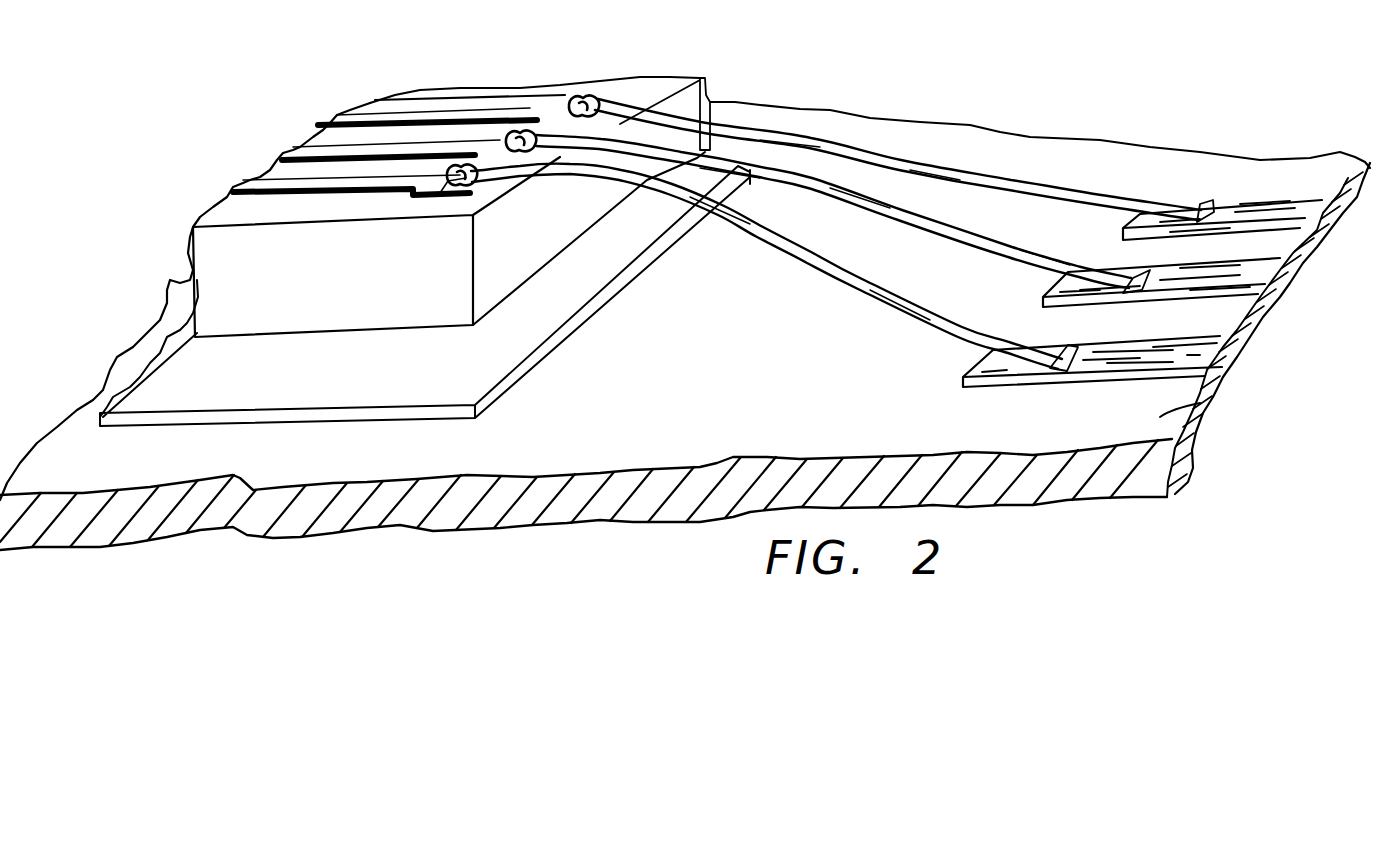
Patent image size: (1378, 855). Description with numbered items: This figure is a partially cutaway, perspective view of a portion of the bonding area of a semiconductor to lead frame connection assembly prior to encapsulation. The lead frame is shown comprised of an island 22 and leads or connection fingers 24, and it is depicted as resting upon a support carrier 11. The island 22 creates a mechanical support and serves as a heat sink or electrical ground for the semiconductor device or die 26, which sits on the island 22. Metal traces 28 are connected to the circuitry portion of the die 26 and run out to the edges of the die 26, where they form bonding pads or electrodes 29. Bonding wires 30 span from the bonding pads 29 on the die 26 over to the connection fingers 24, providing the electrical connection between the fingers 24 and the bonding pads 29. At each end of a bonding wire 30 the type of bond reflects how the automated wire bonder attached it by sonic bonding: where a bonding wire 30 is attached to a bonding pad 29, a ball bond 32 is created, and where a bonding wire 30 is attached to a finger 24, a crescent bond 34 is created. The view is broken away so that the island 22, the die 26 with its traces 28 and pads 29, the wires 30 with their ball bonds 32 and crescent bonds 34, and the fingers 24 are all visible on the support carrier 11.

The support carrier 11 is at (1213, 420).
The island 22 is at (170, 358).
The connection fingers 24 is at (1245, 278).
The die 26 is at (183, 303).
The metal traces 28 is at (293, 150).
The bonding pads 29 is at (433, 183).
The bonding wires 30 is at (628, 114).
The ball bond 32 is at (463, 164).
The crescent bond 34 is at (1120, 276).